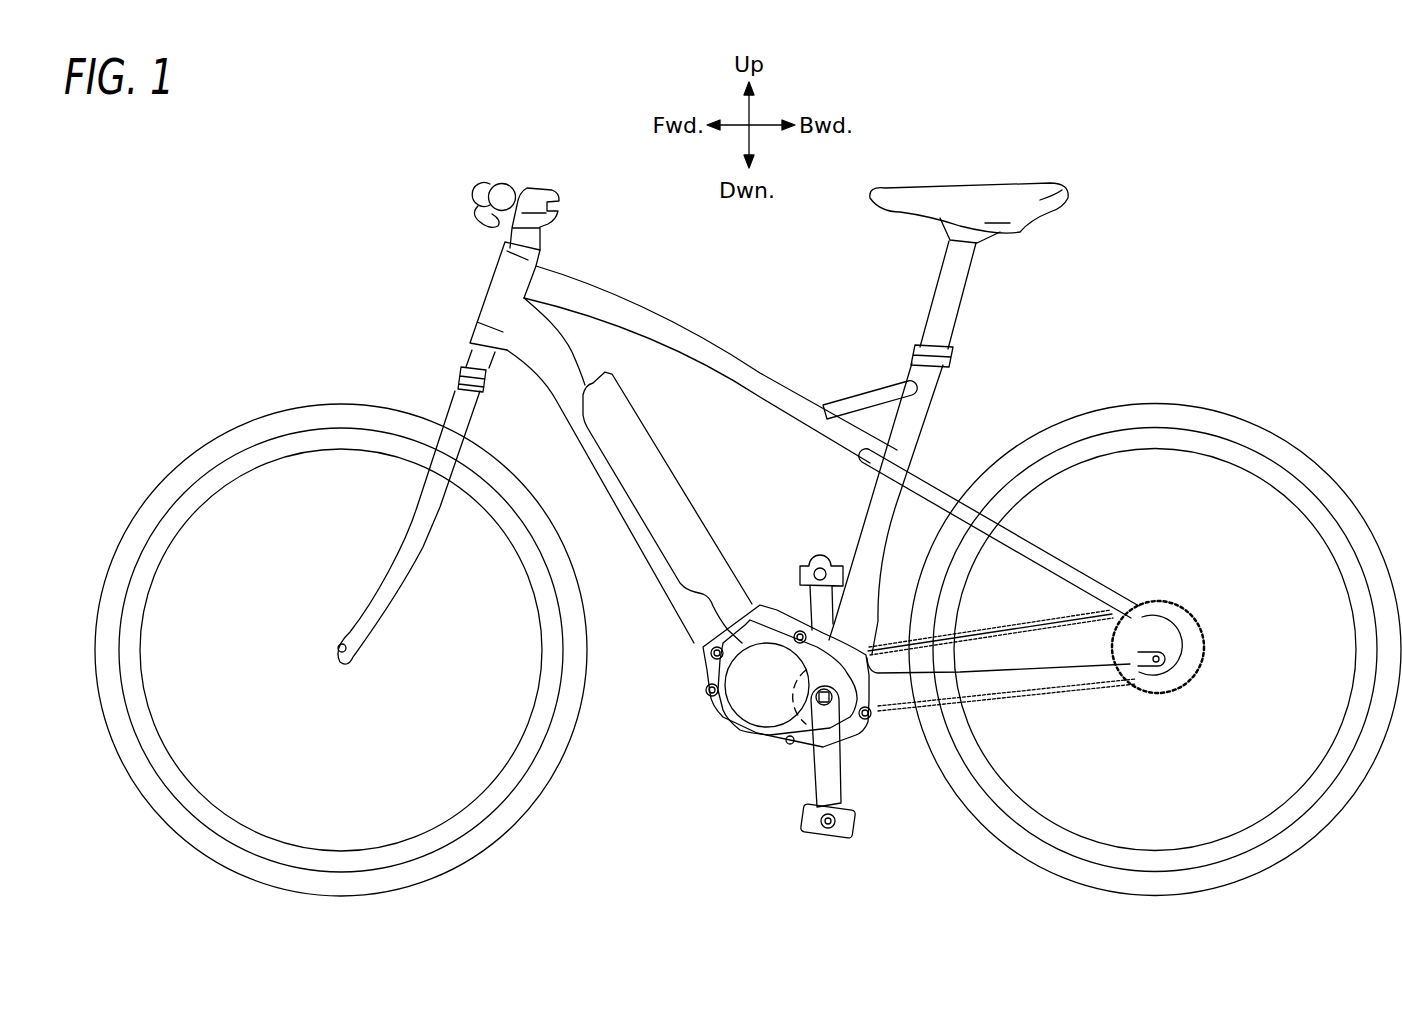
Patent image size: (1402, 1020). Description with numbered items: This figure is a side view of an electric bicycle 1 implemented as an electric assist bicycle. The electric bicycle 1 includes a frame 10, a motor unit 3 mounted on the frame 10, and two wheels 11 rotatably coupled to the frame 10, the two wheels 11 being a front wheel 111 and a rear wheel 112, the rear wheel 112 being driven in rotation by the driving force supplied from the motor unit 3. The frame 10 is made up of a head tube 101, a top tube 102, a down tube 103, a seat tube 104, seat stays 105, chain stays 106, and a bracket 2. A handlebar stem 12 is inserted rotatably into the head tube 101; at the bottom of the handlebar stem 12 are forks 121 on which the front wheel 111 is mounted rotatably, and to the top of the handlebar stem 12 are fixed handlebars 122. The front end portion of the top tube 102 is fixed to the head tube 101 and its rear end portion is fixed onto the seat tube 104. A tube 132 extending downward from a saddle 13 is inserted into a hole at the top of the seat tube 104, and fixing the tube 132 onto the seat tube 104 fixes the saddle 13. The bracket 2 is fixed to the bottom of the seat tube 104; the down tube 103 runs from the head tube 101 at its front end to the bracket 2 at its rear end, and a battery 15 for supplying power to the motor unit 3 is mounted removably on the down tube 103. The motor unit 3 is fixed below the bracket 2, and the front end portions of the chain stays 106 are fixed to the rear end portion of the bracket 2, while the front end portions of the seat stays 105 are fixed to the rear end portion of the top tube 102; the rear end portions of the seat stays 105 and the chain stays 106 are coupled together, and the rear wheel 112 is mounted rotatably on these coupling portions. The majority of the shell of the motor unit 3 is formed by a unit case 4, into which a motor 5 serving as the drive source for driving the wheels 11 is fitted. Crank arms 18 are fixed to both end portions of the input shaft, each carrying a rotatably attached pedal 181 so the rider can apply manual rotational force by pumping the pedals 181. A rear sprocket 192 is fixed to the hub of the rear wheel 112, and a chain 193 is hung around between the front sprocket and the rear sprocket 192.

The electric bicycle 1 is at (1234, 169).
The bracket 2 is at (767, 607).
The motor unit 3 is at (737, 700).
The unit case 4 is at (778, 733).
The motor 5 is at (760, 713).
The frame 10 is at (673, 330).
The wheels 11 is at (748, 629).
The handlebar stem 12 is at (540, 237).
The saddle 13 is at (987, 197).
The battery 15 is at (677, 503).
The crank arms 18 is at (831, 778).
The head tube 101 is at (493, 297).
The top tube 102 is at (764, 383).
The down tube 103 is at (560, 386).
The seat tube 104 is at (918, 405).
The seat stays 105 is at (937, 492).
The chain stays 106 is at (1027, 690).
The front wheel 111 is at (493, 836).
The rear wheel 112 is at (1216, 418).
The forks 121 is at (390, 590).
The handlebars 122 is at (476, 182).
The tube 132 is at (955, 293).
The pedal 181 is at (845, 828).
The rear sprocket 192 is at (1190, 626).
The chain 193 is at (1102, 692).